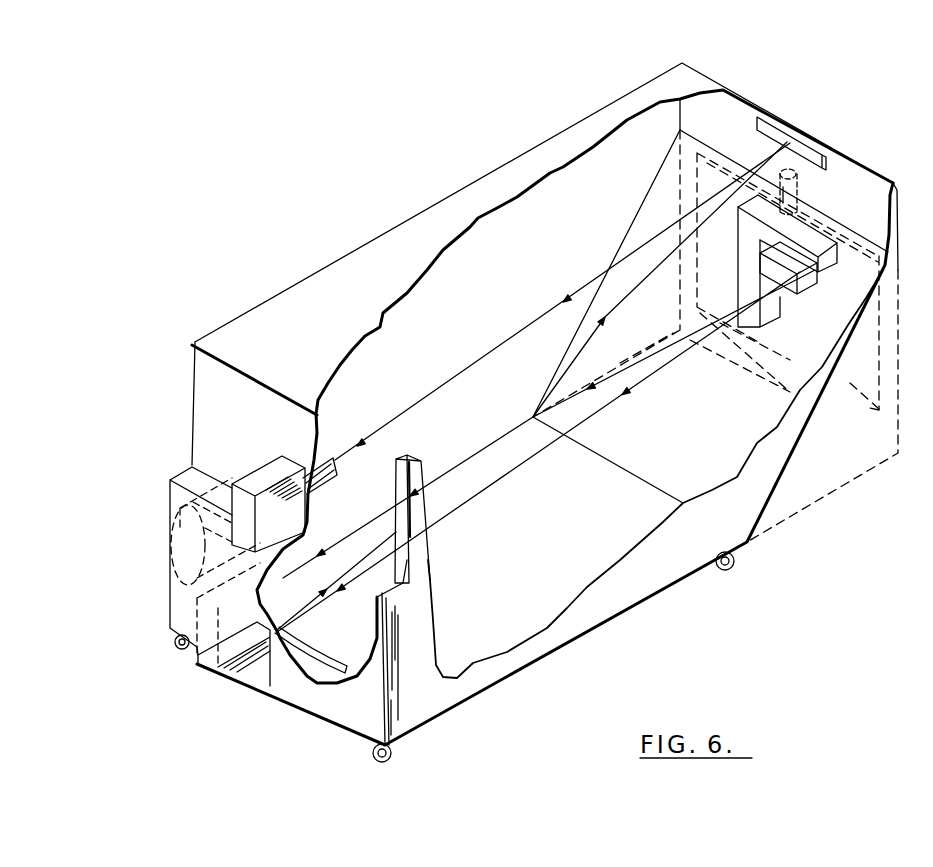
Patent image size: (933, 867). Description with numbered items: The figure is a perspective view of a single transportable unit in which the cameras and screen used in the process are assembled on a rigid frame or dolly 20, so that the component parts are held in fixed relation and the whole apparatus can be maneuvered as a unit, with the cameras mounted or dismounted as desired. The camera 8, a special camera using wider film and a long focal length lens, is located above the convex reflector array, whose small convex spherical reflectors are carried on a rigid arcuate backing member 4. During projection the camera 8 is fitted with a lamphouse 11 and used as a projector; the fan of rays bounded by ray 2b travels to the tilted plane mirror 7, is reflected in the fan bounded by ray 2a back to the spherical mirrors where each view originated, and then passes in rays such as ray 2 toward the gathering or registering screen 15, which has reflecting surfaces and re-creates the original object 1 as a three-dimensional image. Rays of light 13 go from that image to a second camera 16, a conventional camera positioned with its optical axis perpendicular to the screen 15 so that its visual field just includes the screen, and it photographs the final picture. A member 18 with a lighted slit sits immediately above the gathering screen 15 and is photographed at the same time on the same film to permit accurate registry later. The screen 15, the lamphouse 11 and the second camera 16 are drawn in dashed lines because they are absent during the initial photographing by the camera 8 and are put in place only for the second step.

The object 1 is at (745, 252).
The ray of light 2 is at (538, 458).
The ray 2a is at (513, 437).
The ray 2b is at (473, 368).
The backing member 4 is at (298, 648).
The plane mirror 7 is at (820, 158).
The camera 8 is at (256, 481).
The lamphouse 11 is at (178, 547).
The rays of light 13 is at (473, 467).
The screen 15 is at (850, 385).
The second camera 16 is at (203, 617).
The member 18 is at (797, 202).
The rigid frame or dolly 20 is at (582, 625).